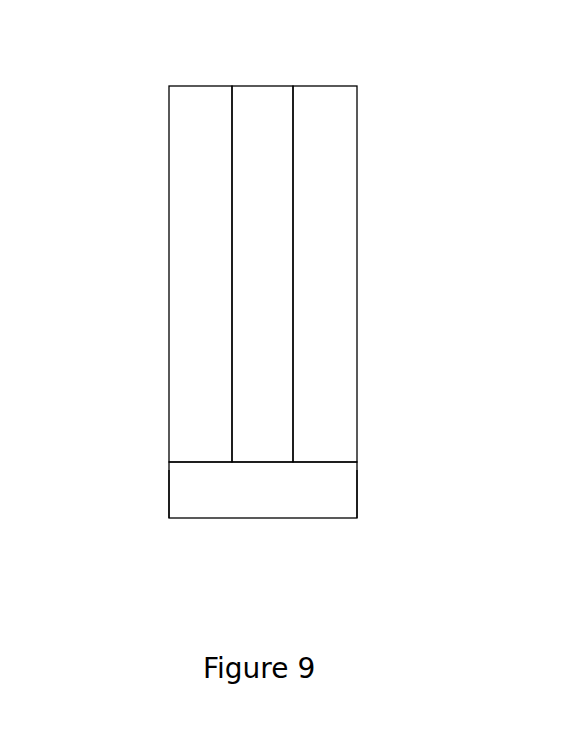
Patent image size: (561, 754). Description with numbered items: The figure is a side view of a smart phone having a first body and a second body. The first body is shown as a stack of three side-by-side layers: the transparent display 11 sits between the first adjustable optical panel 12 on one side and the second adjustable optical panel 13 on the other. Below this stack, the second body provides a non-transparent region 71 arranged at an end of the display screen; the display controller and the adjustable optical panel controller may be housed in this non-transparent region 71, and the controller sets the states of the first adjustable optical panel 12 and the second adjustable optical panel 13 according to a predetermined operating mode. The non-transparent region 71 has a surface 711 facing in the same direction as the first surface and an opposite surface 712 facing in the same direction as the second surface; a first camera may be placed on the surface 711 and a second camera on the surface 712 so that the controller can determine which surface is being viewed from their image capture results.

The second adjustable optical panel 13 is at (199, 83).
The transparent display 11 is at (246, 83).
The first adjustable optical panel 12 is at (326, 92).
The non-transparent region 71 is at (270, 499).
The surface of the non-transparent region facing the first surface direction 711 is at (357, 490).
The surface of the non-transparent region facing the second surface direction 712 is at (169, 498).